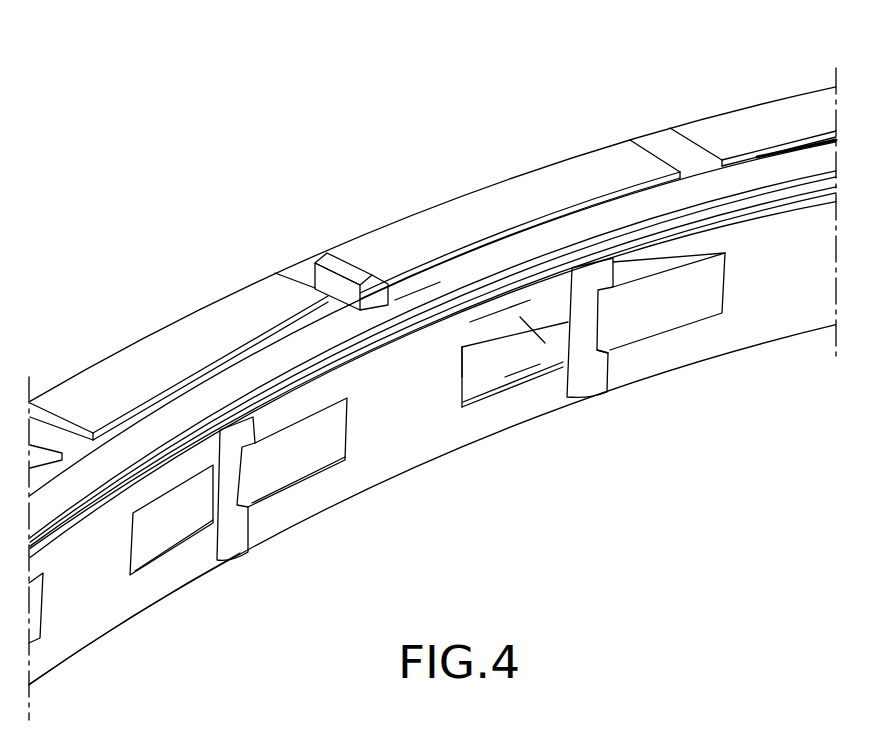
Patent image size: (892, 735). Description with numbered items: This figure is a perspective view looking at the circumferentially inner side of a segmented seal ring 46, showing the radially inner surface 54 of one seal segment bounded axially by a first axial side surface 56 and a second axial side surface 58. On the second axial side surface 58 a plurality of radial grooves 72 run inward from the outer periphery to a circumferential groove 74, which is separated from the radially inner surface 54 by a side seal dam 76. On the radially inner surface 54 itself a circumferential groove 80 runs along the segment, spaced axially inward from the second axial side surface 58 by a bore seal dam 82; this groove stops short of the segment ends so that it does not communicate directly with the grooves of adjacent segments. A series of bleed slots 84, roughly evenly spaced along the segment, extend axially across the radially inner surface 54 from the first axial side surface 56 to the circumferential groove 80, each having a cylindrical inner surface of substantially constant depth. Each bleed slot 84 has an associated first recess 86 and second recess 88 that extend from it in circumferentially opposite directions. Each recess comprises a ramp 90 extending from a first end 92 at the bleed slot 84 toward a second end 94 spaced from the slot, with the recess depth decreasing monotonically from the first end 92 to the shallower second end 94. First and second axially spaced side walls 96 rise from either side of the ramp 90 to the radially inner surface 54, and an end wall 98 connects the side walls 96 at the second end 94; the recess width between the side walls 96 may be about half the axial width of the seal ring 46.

The seal ring 46 is at (228, 238).
The radially inner surface 54 is at (372, 430).
The first axial side surface 56 is at (127, 622).
The second axial side surface 58 is at (161, 356).
The radial grooves 72 is at (667, 143).
The circumferential groove 74 is at (757, 160).
The side seal dam 76 is at (803, 167).
The circumferential groove 80 is at (392, 310).
The bore seal dam 82 is at (410, 332).
The bleed slots 84 is at (607, 360).
The first recess 86 is at (498, 355).
The second recess 88 is at (658, 307).
The ramp 90 is at (517, 367).
The first end 92 is at (598, 352).
The second end 94 is at (462, 377).
The axially spaced side walls 96 is at (557, 308).
The end wall 98 is at (463, 357).